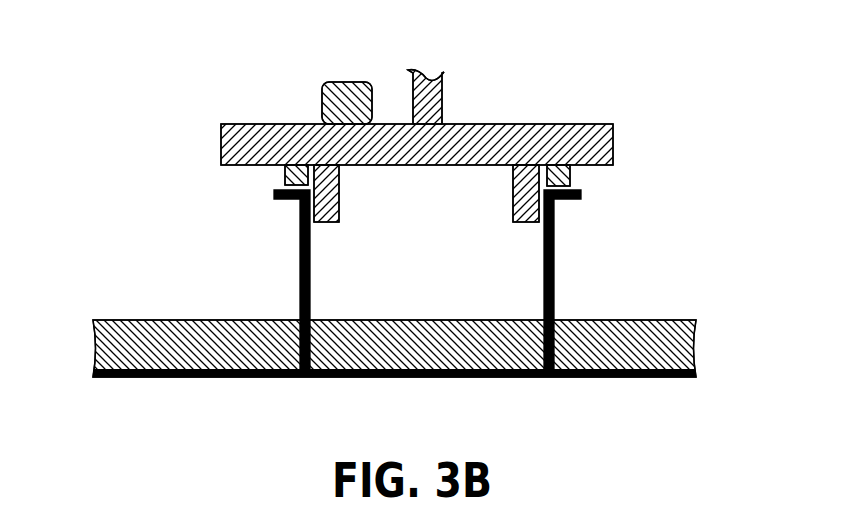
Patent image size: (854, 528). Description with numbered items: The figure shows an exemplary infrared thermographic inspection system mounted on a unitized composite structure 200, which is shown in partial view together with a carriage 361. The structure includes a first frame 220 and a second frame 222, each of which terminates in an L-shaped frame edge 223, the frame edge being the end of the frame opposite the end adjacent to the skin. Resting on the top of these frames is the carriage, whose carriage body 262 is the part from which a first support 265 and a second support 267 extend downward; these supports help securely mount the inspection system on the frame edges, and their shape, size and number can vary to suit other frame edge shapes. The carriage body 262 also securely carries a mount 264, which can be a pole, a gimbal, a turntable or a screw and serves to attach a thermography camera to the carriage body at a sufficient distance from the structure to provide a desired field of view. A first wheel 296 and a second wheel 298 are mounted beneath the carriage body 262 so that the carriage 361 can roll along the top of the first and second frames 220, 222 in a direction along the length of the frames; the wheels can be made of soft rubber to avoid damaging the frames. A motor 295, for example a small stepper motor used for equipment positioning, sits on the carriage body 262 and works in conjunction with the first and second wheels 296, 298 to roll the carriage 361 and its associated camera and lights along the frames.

The unitized composite structure 200 is at (128, 381).
The first frame 220 is at (312, 290).
The second frame 222 is at (541, 257).
The L-shaped frame edge 223 is at (557, 281).
The carriage body 262 is at (220, 148).
The mount 264 is at (445, 102).
The first support 265 is at (321, 224).
The second support 267 is at (511, 198).
The motor 295 is at (357, 80).
The first wheel 296 is at (300, 167).
The second wheel 298 is at (560, 164).
The carriage 361 is at (731, 126).